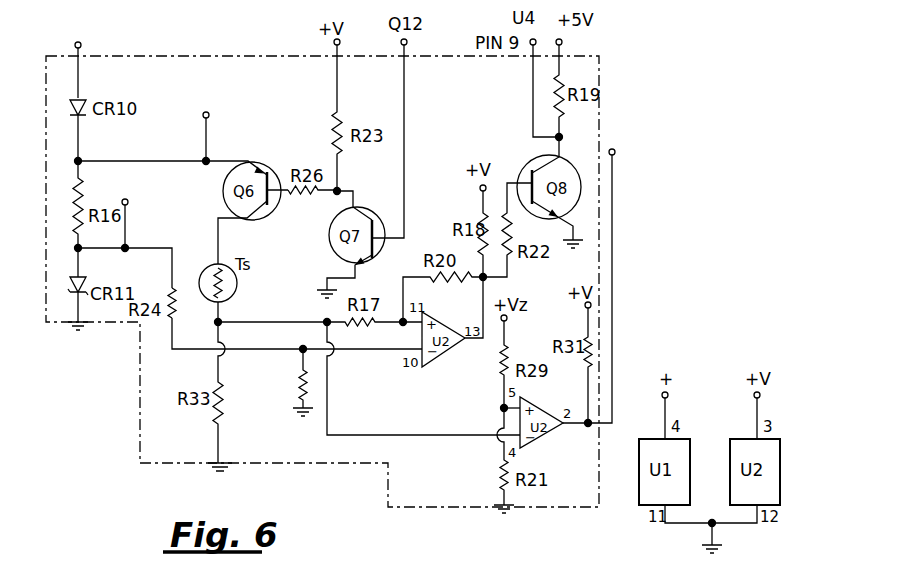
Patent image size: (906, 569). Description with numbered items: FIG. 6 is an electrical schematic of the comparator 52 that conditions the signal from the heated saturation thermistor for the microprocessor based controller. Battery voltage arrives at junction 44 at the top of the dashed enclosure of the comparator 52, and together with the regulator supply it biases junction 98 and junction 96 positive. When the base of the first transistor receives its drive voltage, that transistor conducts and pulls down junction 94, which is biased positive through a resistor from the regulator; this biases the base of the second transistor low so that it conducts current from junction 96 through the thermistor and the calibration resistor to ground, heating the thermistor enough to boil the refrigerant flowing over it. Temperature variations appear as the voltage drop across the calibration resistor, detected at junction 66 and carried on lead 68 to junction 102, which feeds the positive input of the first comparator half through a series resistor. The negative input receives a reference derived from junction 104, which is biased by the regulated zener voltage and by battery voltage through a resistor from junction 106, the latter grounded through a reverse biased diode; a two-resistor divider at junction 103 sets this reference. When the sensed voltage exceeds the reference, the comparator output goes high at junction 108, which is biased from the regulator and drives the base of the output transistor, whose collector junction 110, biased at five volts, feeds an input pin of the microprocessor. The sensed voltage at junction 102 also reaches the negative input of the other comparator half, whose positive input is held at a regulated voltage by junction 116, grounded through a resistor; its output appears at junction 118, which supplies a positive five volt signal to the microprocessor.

The junction 44 is at (81, 44).
The comparator 52 is at (601, 103).
The junction 66 is at (216, 321).
The lead 68 is at (272, 321).
The junction 94 is at (339, 189).
The junction 96 is at (204, 159).
The junction 98 is at (80, 159).
The junction 102 is at (326, 324).
The U2 inverting input node 103 is at (302, 351).
The junction 104 is at (127, 246).
The junction 106 is at (80, 251).
The junction 108 is at (482, 280).
The collector junction 110 is at (561, 135).
The junction 116 is at (501, 410).
The junction 118 is at (586, 427).